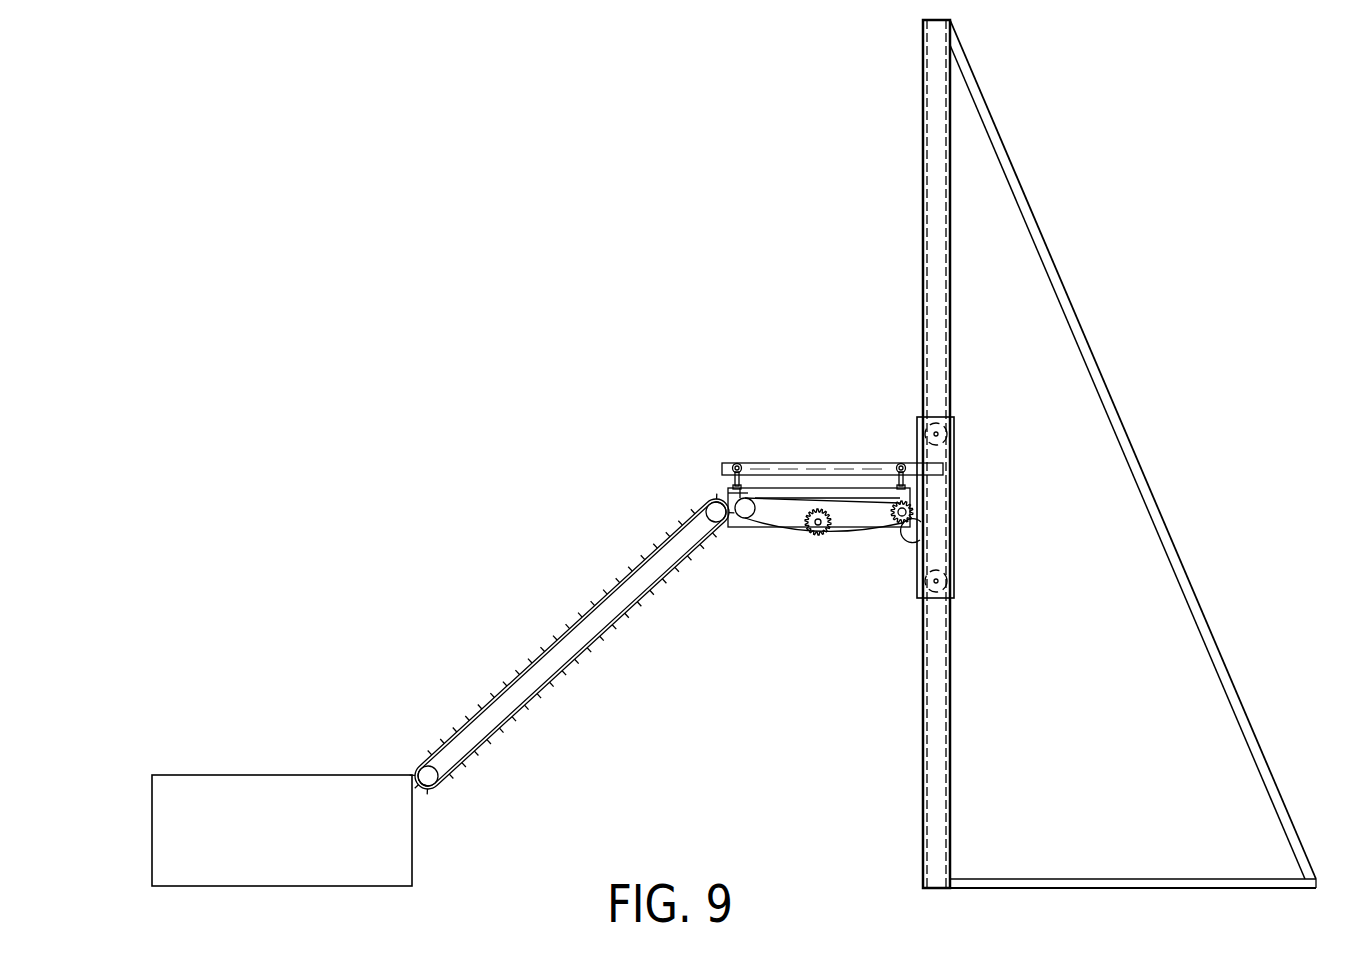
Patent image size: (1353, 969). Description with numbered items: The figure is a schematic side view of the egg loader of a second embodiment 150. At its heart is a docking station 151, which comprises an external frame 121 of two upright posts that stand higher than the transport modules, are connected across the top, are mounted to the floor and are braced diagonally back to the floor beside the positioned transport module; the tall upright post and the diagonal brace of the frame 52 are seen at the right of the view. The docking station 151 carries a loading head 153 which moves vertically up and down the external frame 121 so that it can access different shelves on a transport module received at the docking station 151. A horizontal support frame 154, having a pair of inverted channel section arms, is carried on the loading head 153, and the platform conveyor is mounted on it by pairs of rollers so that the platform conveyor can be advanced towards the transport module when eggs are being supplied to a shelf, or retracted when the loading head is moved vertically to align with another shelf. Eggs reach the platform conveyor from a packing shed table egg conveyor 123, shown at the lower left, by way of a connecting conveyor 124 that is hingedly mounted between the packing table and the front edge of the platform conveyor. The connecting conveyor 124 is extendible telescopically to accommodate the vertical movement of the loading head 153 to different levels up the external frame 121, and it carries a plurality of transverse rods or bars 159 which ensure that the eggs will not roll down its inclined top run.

The egg loader of a second embodiment 150 is at (615, 190).
The external frame 121 is at (918, 172).
The docking station 151 is at (858, 286).
The support frame 52 is at (1113, 407).
The loading head 153 is at (765, 432).
The horizontal support frame 154 is at (877, 468).
The connecting conveyor 124 is at (568, 558).
The transverse rods or bars 159 is at (495, 697).
The packing shed table egg conveyor 123 is at (305, 846).